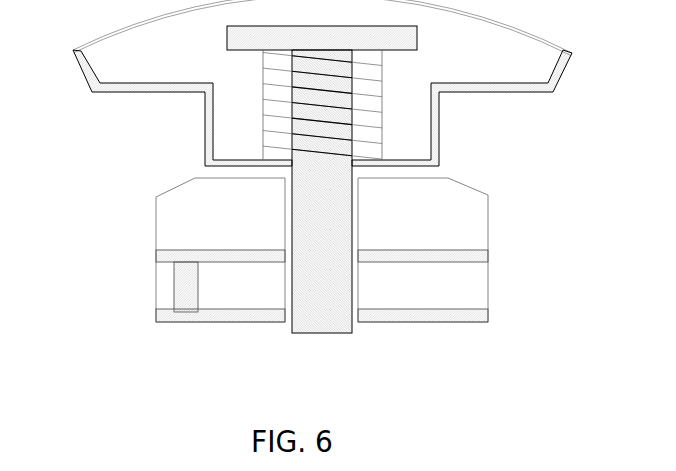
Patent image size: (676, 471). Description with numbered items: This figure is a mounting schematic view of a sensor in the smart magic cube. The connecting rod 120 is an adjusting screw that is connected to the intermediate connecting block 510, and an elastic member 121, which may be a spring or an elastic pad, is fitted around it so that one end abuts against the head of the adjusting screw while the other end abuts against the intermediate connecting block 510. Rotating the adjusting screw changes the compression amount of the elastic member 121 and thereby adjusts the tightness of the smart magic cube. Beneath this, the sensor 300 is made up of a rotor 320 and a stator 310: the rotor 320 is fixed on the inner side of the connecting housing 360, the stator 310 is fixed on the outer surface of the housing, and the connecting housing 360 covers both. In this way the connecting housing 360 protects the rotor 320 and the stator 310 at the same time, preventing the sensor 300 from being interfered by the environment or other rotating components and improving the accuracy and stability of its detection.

The intermediate connecting block 510 is at (437, 128).
The connecting rod 120 is at (327, 198).
The elastic member 121 is at (273, 130).
The connecting housing 360 is at (246, 236).
The sensor 300 is at (252, 286).
The rotor 320 is at (180, 287).
The stator 310 is at (165, 316).